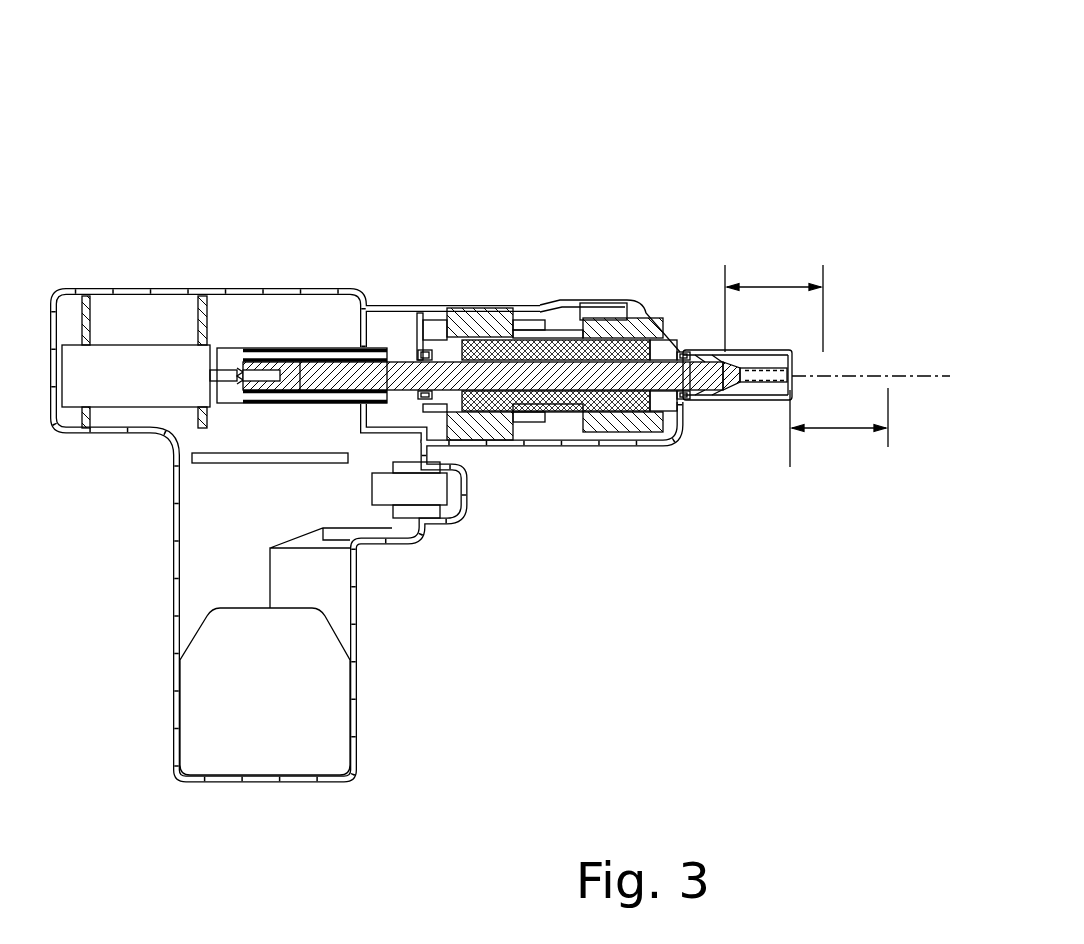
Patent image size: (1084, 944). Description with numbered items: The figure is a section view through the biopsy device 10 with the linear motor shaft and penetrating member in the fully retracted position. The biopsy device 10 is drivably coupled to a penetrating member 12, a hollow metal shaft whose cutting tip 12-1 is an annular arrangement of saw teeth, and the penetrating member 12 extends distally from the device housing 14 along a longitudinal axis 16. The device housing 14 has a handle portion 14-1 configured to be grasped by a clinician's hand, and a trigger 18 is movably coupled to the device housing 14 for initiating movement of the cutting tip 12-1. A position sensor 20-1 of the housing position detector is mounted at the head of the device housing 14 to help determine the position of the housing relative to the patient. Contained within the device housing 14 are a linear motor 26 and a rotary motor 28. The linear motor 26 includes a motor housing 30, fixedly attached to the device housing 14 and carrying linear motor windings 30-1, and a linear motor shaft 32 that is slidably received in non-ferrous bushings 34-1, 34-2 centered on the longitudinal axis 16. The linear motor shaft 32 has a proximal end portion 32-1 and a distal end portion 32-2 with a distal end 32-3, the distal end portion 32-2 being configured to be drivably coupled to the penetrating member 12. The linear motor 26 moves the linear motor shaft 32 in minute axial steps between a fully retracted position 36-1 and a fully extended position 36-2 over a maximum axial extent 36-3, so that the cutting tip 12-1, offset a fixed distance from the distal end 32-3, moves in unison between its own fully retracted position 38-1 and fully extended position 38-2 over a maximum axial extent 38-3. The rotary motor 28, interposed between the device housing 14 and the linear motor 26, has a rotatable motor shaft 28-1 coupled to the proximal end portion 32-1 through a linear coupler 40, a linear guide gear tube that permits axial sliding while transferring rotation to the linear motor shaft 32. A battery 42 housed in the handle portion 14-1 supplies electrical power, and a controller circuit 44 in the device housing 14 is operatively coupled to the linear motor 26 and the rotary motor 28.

The biopsy device 10 is at (835, 118).
The penetrating member 12 is at (765, 401).
The cutting tip 12-1 is at (788, 370).
The device housing 14 is at (528, 306).
The handle portion 14-1 is at (175, 642).
The longitudinal axis 16 is at (918, 372).
The trigger 18 is at (450, 512).
The position sensor 20-1 is at (620, 300).
The linear motor 26 is at (487, 296).
The rotary motor 28 is at (140, 387).
The rotatable motor shaft 28-1 is at (237, 368).
The motor housing 30 is at (656, 345).
The linear motor windings 30-1 is at (685, 347).
The linear motor shaft 32 is at (607, 376).
The proximal end portion 32-1 is at (298, 362).
The distal end portion 32-2 is at (700, 397).
The distal end 32-3 is at (718, 392).
The non-ferrous bushing 34-1 is at (420, 313).
The non-ferrous bushing 34-2 is at (682, 400).
The fully retracted position 36-1 is at (728, 280).
The fully extended position 36-2 is at (825, 280).
The maximum axial extent 36-3 is at (780, 288).
The fully retracted position 38-1 is at (790, 447).
The fully extended position 38-2 is at (890, 440).
The maximum axial extent 38-3 is at (843, 430).
The linear coupler 40 is at (272, 335).
The battery 42 is at (247, 712).
The controller circuit 44 is at (228, 464).